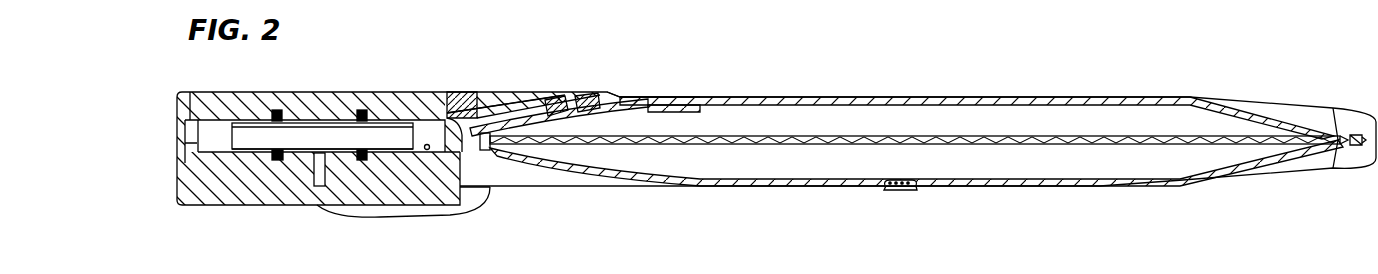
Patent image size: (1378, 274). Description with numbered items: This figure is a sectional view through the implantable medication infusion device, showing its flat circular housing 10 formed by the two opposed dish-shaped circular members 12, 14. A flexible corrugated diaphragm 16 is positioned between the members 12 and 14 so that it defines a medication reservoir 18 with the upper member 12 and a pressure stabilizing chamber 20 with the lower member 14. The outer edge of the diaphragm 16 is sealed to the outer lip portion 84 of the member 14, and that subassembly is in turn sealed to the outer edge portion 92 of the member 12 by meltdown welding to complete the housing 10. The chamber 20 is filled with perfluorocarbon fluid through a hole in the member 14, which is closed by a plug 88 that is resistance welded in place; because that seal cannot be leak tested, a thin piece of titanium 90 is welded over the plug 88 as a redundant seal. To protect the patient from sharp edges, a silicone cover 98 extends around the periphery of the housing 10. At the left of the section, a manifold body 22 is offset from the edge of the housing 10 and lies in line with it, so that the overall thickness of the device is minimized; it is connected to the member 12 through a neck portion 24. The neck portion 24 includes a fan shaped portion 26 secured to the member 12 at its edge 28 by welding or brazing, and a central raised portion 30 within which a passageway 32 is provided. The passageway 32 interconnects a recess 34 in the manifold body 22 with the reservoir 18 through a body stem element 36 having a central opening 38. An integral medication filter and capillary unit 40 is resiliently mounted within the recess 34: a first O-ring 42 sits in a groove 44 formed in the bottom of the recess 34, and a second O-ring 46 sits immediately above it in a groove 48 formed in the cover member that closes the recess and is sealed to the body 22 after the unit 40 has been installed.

The housing 10 is at (955, 91).
The dish-shaped circular member 12 is at (1263, 115).
The dish-shaped circular member 14 is at (1233, 168).
The flexible corrugated diaphragm 16 is at (1110, 137).
The medication reservoir 18 is at (896, 130).
The pressure stabilizing chamber 20 is at (941, 170).
The manifold body 22 is at (322, 189).
The neck portion 24 is at (531, 87).
The fan shaped portion 26 is at (633, 98).
The edge 28 is at (667, 97).
The central raised portion 30 is at (508, 90).
The passageway 32 is at (473, 107).
The recess 34 is at (427, 150).
The body stem element 36 is at (598, 94).
The central opening 38 is at (566, 98).
The integral medication filter and capillary unit 40 is at (222, 141).
The first O-ring 42 is at (265, 153).
The groove 44 is at (278, 160).
The O-ring 46 is at (364, 110).
The groove 48 is at (280, 110).
The outer lip portion 84 is at (1353, 147).
The plug 88 is at (892, 178).
The thin piece of titanium 90 is at (893, 190).
The outer edge portion 92 is at (1352, 134).
The silicone cover 98 is at (1303, 167).